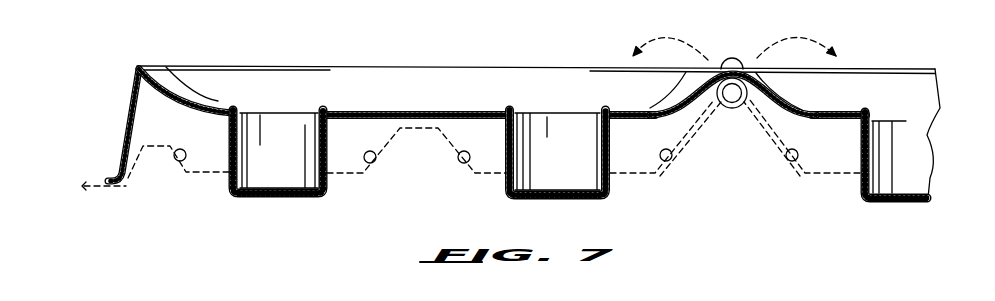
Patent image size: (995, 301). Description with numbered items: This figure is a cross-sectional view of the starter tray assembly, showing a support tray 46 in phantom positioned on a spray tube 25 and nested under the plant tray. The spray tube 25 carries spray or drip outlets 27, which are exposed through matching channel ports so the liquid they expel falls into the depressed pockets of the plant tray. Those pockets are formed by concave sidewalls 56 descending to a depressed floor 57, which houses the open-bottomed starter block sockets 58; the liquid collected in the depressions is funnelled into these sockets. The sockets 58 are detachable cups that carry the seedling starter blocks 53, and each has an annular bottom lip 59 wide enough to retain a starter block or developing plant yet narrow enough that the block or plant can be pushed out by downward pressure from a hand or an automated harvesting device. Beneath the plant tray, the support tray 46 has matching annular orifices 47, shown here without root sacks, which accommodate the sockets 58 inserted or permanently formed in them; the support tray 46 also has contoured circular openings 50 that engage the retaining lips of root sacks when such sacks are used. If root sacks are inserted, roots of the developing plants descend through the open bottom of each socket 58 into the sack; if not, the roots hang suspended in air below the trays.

The spray tube 25 is at (728, 106).
The spray or drip outlets 27 is at (783, 40).
The support tray 46 is at (184, 182).
The annular orifices 47 is at (505, 189).
The contoured circular openings 50 is at (139, 66).
The seedling starter blocks 53 is at (563, 118).
The concave sidewalls 56 is at (158, 86).
The depressed floor 57 is at (357, 113).
The sockets 58 is at (330, 192).
The annular bottom lips 59 is at (304, 200).